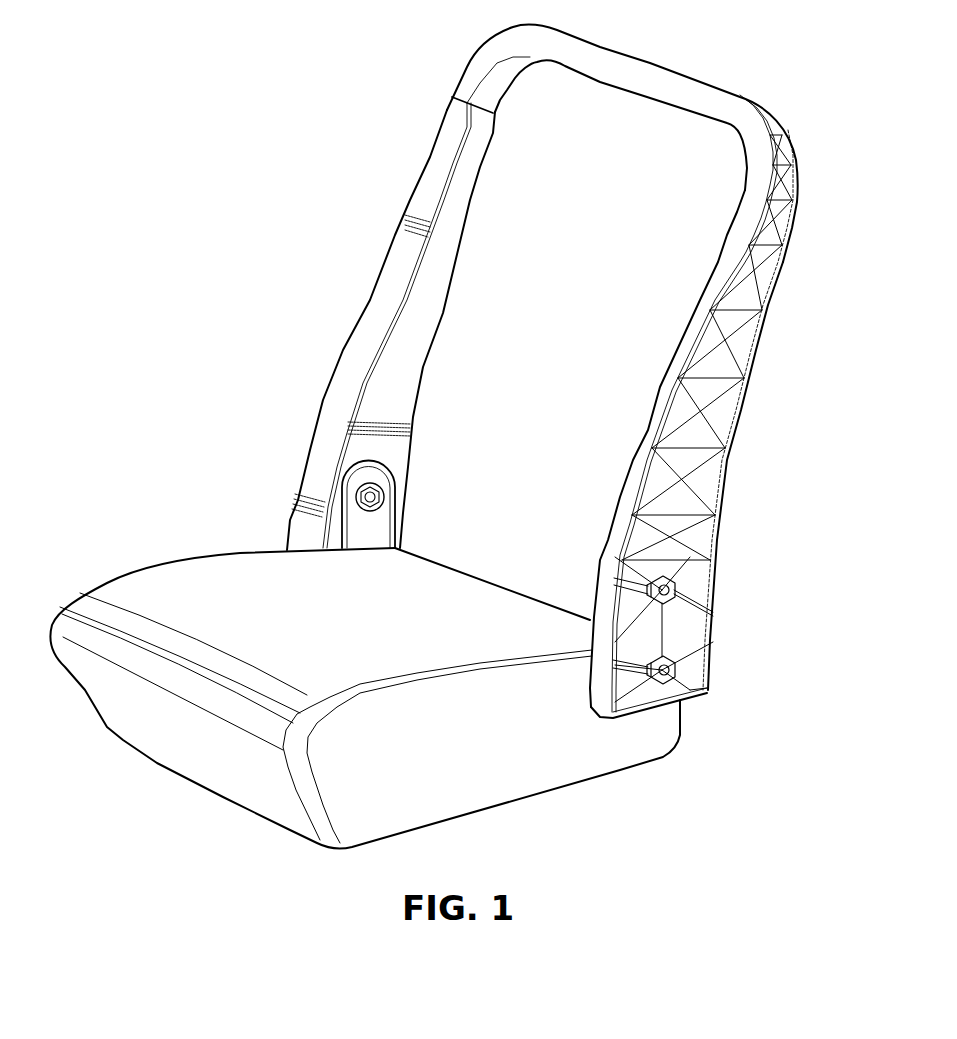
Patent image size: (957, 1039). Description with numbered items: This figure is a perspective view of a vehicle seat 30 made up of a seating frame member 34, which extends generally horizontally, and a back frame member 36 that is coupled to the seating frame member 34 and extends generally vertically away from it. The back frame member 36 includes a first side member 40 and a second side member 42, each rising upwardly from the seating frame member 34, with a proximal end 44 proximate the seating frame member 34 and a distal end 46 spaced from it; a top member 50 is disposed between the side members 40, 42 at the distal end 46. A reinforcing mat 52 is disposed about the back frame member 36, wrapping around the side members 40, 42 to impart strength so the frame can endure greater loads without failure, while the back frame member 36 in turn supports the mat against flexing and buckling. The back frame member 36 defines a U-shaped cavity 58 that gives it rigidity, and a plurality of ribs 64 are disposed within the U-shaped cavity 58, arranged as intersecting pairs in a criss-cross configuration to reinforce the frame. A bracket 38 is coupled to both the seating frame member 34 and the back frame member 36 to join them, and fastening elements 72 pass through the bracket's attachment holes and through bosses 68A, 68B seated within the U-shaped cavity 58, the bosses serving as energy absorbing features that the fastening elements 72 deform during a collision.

The seat 30 is at (692, 758).
The seating frame member 34 is at (352, 812).
The back frame member 36 is at (722, 70).
The bracket 38 is at (347, 528).
The first side member 40 is at (782, 283).
The second side member 42 is at (392, 210).
The proximal end 44 is at (719, 674).
The distal end 46 is at (807, 188).
The top member 50 is at (615, 62).
The reinforcing mat 52 is at (411, 380).
The U-shaped cavity 58 is at (679, 538).
The ribs 64 is at (678, 425).
The first fastener boss 68A is at (637, 588).
The second fastener boss 68B is at (633, 660).
The fastening element 72 is at (671, 593).